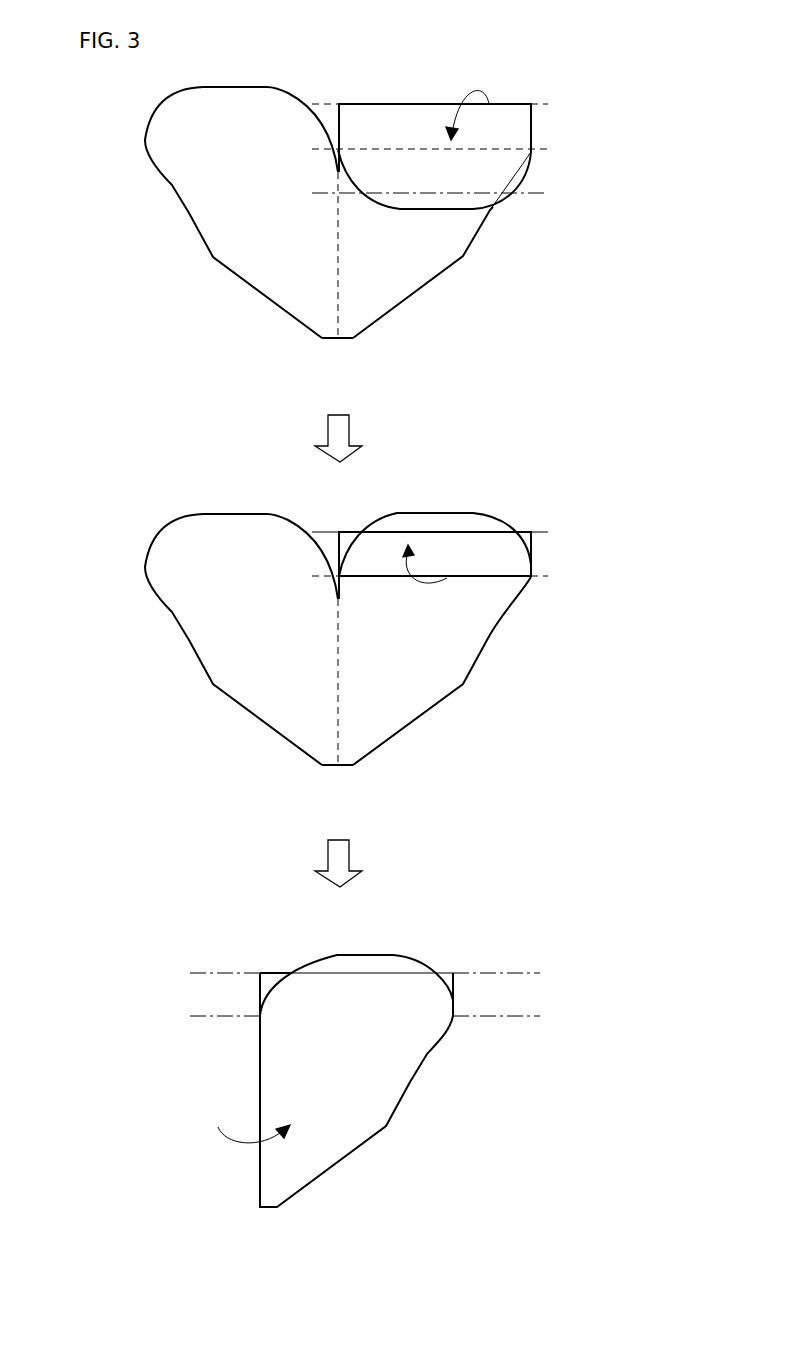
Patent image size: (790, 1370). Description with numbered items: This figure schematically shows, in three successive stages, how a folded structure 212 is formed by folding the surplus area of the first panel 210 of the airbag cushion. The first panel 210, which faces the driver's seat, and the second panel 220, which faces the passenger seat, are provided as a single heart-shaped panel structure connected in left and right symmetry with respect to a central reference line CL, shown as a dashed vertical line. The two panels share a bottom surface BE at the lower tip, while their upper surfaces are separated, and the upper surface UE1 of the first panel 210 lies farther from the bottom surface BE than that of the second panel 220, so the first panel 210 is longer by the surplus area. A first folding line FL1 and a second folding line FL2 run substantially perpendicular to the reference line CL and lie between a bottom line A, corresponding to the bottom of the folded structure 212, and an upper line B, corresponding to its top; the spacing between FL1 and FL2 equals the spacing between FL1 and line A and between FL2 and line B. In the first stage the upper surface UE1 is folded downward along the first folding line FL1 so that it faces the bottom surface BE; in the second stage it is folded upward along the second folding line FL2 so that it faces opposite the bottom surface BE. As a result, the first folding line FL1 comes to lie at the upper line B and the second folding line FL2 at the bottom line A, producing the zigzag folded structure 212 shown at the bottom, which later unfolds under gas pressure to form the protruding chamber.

The second panel 220 is at (228, 225).
The first panel 210 is at (385, 282).
The folded structure 212 is at (268, 980).
The upper surface UE1 is at (448, 213).
The bottom surface BE is at (330, 341).
The central reference line CL is at (337, 265).
The first folding line FL1 is at (553, 105).
The second folding line FL2 is at (553, 150).
The bottom line A is at (520, 1017).
The upper line B is at (553, 195).